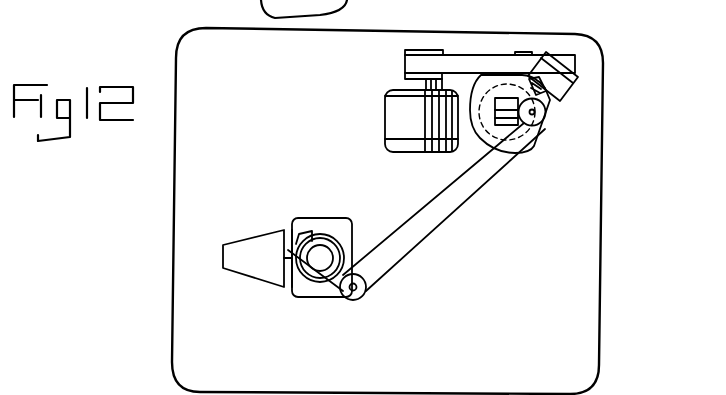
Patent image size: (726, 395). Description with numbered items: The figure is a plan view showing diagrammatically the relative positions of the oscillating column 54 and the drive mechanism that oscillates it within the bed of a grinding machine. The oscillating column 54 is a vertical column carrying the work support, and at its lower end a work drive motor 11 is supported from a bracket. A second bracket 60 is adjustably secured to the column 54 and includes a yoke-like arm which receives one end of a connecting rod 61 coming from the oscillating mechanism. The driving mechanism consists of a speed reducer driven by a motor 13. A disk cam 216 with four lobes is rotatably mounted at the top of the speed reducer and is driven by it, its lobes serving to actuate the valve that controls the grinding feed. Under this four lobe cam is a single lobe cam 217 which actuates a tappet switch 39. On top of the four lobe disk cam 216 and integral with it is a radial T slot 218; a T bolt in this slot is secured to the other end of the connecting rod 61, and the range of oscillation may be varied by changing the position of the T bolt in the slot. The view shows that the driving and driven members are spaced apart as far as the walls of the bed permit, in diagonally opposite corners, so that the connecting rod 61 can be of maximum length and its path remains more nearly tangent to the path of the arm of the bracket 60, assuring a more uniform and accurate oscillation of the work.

The work drive motor 11 is at (250, 237).
The motor 13 is at (387, 107).
The tappet switch 39 is at (560, 82).
The oscillating column 54 is at (323, 257).
The second bracket 60 is at (337, 294).
The connecting rod 61 is at (432, 231).
The disk cam 216 is at (542, 147).
The single lobe cam 217 is at (539, 52).
The radial T slot 218 is at (503, 108).